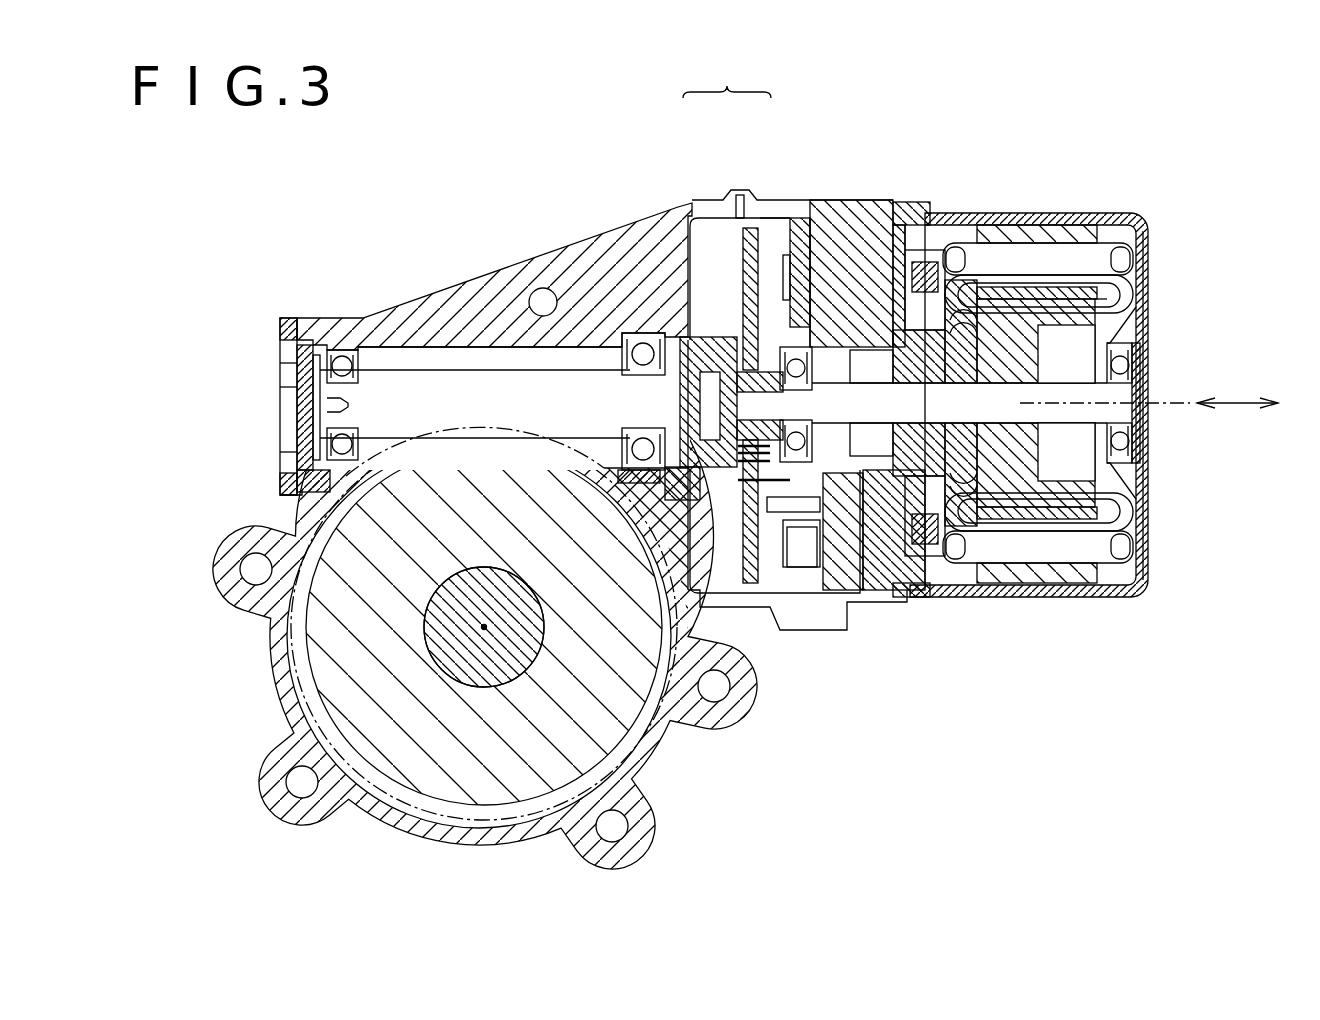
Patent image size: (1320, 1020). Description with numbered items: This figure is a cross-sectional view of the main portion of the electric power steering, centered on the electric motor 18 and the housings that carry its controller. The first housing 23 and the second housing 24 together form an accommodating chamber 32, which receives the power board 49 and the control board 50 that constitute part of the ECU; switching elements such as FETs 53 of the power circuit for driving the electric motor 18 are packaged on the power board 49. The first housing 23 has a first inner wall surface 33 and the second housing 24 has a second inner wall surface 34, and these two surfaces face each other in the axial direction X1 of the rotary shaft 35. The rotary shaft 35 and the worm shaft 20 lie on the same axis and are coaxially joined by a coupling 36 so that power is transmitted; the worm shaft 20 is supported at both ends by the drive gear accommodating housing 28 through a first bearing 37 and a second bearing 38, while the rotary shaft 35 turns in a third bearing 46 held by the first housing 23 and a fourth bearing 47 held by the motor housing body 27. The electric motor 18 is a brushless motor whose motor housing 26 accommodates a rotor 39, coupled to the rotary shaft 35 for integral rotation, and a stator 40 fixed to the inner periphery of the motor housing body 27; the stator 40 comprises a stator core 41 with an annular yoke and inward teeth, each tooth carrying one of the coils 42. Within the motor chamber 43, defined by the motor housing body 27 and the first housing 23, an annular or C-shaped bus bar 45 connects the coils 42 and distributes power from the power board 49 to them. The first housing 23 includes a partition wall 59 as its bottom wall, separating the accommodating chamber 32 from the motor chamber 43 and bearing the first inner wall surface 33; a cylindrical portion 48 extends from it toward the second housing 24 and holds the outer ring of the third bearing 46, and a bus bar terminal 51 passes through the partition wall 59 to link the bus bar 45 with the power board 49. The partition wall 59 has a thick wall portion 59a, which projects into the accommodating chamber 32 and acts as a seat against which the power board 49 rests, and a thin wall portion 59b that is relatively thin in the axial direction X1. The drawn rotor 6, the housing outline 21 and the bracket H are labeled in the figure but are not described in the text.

The pump rotor 6 is at (478, 627).
The electric motor 18 is at (1152, 234).
The worm shaft 20 is at (418, 368).
The pump housing 21 is at (295, 512).
The first housing 23 is at (768, 212).
The second housing 24 is at (693, 212).
The motor housing 26 is at (945, 235).
The motor housing body 27 is at (1065, 215).
The drive gear accommodating housing 28 is at (455, 292).
The accommodating chamber 32 is at (685, 310).
The first inner wall surface 33 is at (805, 235).
The second inner wall surface 34 is at (640, 325).
The rotary shaft 35 is at (1003, 300).
The coupling 36 is at (650, 330).
The first bearing 37 is at (340, 345).
The second bearing 38 is at (637, 332).
The rotor 39 is at (1125, 262).
The stator 40 is at (1090, 235).
The stator core 41 is at (1045, 262).
The coils 42 is at (965, 240).
The motor chamber 43 is at (918, 250).
The bus bar 45 is at (903, 240).
The third bearing 46 is at (812, 372).
The fourth bearing 47 is at (1140, 385).
The cylindrical portion 48 is at (752, 300).
The power board 49 is at (790, 240).
The control board 50 is at (773, 235).
The bus bar terminal 51 is at (775, 517).
The FETs 53 is at (775, 265).
The partition wall 59 is at (875, 240).
The thick wall portion 59a is at (900, 463).
The thin wall portion 59b is at (850, 592).
The housing assembly H is at (727, 77).
The axial direction X1 is at (1235, 403).